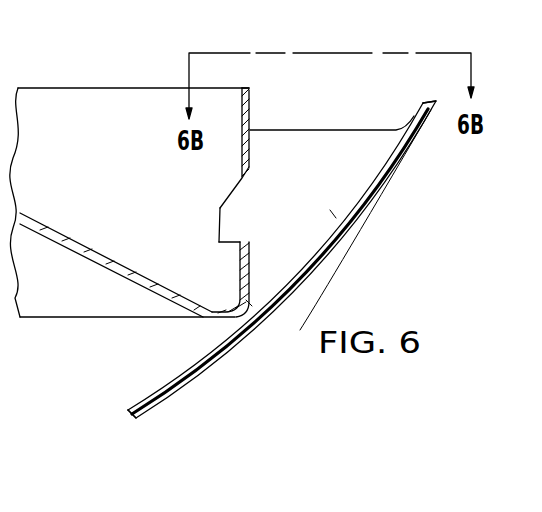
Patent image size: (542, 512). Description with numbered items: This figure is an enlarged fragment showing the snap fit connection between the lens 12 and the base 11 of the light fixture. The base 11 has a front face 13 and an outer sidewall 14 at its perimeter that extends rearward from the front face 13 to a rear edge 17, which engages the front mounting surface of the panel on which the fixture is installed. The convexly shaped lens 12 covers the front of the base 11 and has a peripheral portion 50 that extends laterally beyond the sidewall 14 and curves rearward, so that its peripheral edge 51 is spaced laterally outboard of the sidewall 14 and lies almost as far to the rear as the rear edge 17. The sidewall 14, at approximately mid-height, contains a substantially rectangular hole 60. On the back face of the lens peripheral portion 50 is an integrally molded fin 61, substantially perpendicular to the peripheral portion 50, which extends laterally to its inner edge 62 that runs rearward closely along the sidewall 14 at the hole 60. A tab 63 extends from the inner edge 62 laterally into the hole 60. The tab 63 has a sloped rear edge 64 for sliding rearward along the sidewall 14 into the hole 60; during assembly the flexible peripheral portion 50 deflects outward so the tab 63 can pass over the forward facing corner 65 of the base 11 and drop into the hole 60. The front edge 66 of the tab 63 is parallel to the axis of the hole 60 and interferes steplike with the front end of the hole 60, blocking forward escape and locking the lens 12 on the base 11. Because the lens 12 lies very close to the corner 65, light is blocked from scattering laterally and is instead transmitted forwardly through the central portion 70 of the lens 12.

The base 11 is at (95, 84).
The lens 12 is at (201, 389).
The front face 13 is at (93, 320).
The outer sidewall 14 is at (250, 112).
The rear edge 17 is at (247, 87).
The peripheral portion 50 is at (392, 168).
The peripheral edge 51 is at (431, 100).
The hole 60 is at (244, 232).
The fin 61 is at (323, 195).
The inner edge 62 is at (240, 274).
The tab 63 is at (232, 203).
The sloped rear edge 64 is at (241, 181).
The forward facing corner 65 is at (238, 318).
The front edge 66 is at (220, 247).
The central portion 70 is at (163, 404).